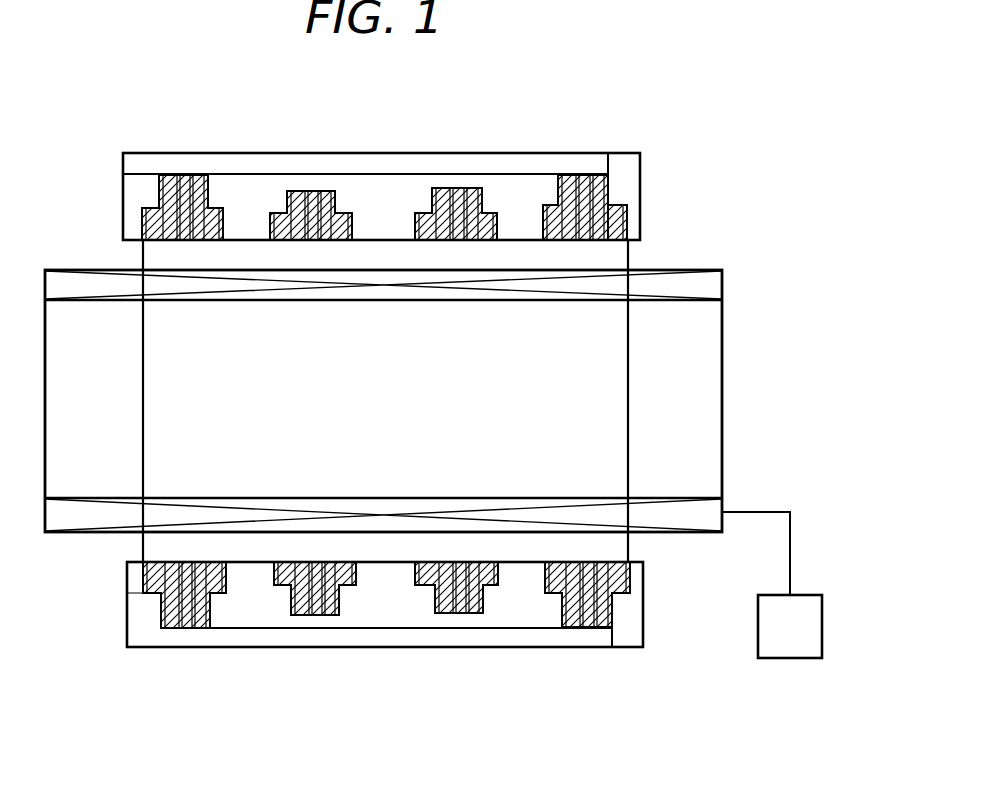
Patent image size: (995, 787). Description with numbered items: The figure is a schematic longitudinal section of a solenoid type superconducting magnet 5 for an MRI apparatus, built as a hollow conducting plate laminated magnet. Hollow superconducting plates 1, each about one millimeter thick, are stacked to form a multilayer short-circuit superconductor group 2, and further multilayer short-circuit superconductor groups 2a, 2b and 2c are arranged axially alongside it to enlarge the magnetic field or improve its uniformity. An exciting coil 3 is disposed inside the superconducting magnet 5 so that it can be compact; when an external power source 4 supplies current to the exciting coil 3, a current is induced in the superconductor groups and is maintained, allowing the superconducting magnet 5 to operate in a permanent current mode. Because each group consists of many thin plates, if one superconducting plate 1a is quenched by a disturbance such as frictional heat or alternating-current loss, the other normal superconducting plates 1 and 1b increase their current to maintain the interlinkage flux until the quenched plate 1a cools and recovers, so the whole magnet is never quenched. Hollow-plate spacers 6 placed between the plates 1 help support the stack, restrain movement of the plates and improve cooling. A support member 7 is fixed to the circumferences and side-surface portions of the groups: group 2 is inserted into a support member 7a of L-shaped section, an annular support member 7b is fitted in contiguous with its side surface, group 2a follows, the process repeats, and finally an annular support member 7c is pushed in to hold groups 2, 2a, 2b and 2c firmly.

The hollow superconducting plate 1 is at (133, 647).
The superconducting plate 1a is at (153, 596).
The superconducting plate 1b is at (202, 622).
The multilayer short-circuit superconductor group 2 is at (218, 595).
The multilayer short-circuit superconductor group 2a is at (333, 616).
The multilayer short-circuit superconductor group 2b is at (467, 613).
The multilayer short-circuit superconductor group 2c is at (587, 628).
The exciting coil 3 is at (712, 284).
The external power source 4 is at (758, 613).
The superconducting magnet 5 is at (643, 193).
The spacer 6 is at (208, 175).
The support member 7 is at (653, 98).
The support member 7a is at (393, 165).
The annular support member 7b is at (488, 172).
The annular support member 7c is at (620, 165).